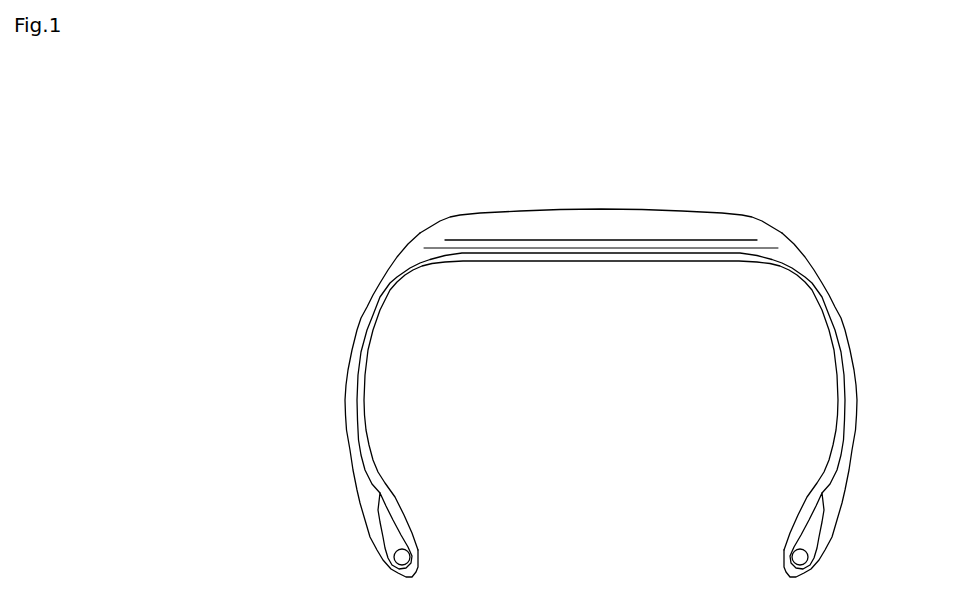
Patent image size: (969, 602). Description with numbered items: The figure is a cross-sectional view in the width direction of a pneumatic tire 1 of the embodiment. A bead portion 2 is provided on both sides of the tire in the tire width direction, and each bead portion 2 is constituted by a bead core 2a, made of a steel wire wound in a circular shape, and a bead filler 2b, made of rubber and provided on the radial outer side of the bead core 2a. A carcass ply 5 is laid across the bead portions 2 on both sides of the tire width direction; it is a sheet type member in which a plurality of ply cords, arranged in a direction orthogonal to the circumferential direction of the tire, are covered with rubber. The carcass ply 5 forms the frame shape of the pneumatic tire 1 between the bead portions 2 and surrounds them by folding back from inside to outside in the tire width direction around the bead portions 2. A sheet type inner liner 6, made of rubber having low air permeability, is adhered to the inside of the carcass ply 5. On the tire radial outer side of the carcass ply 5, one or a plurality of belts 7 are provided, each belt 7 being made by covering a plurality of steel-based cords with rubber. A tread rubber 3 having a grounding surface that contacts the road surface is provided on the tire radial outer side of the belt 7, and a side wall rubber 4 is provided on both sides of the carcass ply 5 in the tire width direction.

The pneumatic tire 1 is at (602, 163).
The bead portion 2 is at (602, 535).
The bead core 2a is at (394, 558).
The bead filler 2b is at (388, 533).
The tread rubber 3 is at (660, 217).
The side wall rubber 4 is at (347, 402).
The carcass ply 5 is at (547, 255).
The inner liner 6 is at (364, 388).
The belt 7 is at (603, 242).